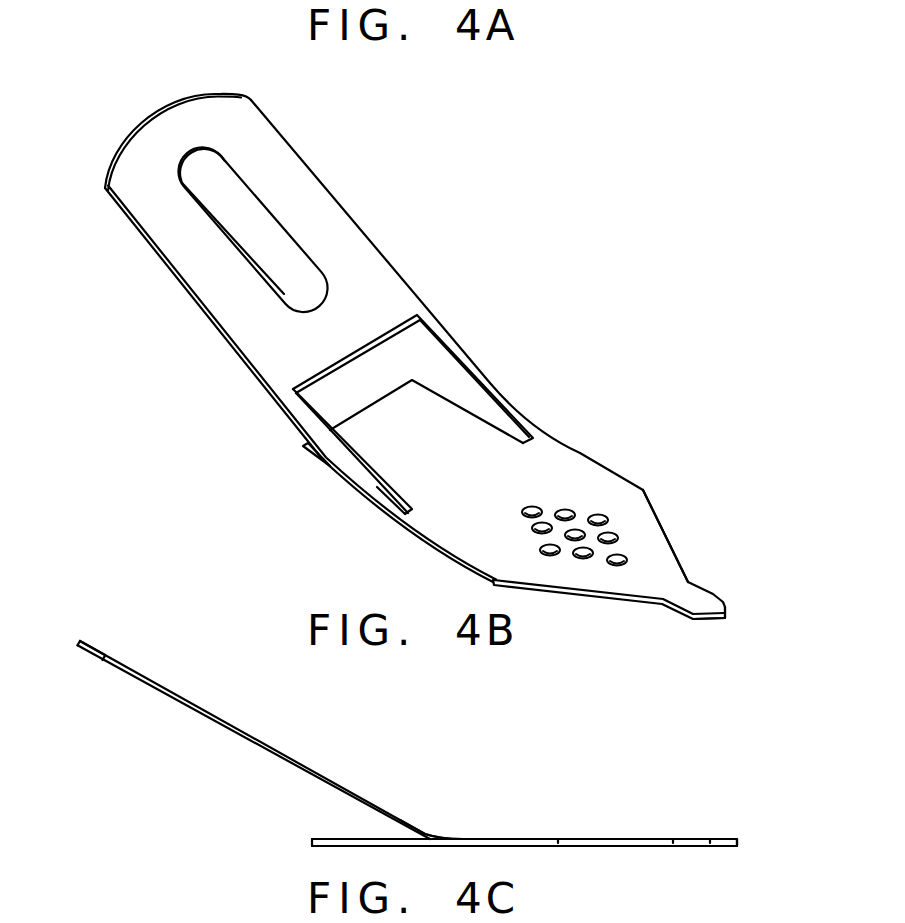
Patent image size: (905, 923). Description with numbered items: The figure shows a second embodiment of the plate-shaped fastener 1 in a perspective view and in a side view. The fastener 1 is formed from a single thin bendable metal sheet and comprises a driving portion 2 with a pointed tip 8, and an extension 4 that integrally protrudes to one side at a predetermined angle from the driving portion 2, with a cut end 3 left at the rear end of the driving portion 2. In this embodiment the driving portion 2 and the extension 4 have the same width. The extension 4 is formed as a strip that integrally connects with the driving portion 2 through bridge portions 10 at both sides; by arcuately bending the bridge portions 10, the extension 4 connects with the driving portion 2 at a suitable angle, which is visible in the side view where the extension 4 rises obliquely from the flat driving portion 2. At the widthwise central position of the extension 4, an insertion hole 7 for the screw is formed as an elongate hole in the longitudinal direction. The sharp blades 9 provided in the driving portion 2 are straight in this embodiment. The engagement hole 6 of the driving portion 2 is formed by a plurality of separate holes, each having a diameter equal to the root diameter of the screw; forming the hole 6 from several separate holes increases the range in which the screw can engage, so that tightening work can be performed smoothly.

In FIG. 4A, the plate-shaped fastener 1 is at (312, 161).
In FIG. 4B, the plate-shaped fastener 1 is at (291, 752).
In FIG. 4A, the driving portion 2 is at (573, 477).
In FIG. 4B, the driving portion 2 is at (523, 837).
In FIG. 4A, the cut end 3 is at (358, 412).
In FIG. 4B, the cut end 3 is at (310, 843).
In FIG. 4A, the extension 4 is at (177, 228).
In FIG. 4B, the extension 4 is at (97, 647).
In FIG. 4A, the engagement hole 6 is at (526, 517).
In FIG. 4A, the insertion hole 7 is at (278, 263).
In FIG. 4A, the pointed tip 8 is at (706, 622).
In FIG. 4B, the pointed tip 8 is at (723, 847).
In FIG. 4A, the sharp blades 9 is at (663, 530).
In FIG. 4B, the sharp blades 9 is at (631, 847).
In FIG. 4A, the bridge portions 10 is at (480, 380).
In FIG. 4B, the bridge portions 10 is at (407, 822).